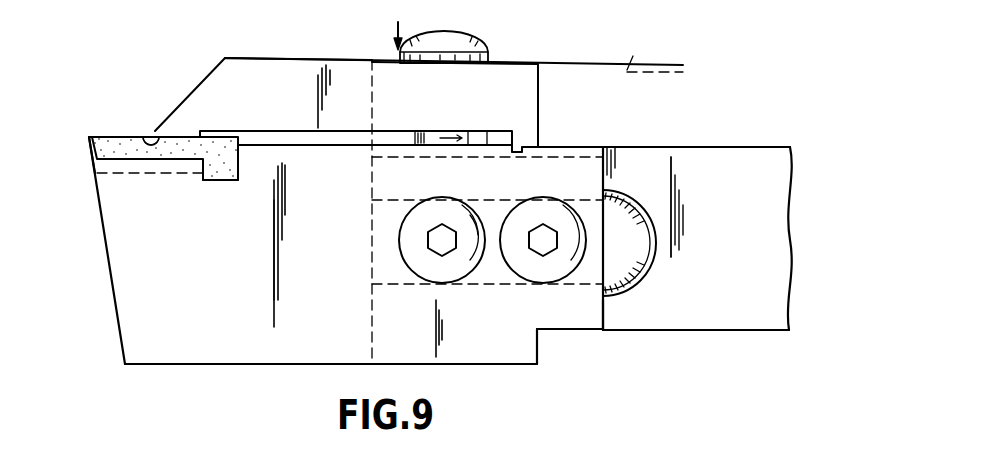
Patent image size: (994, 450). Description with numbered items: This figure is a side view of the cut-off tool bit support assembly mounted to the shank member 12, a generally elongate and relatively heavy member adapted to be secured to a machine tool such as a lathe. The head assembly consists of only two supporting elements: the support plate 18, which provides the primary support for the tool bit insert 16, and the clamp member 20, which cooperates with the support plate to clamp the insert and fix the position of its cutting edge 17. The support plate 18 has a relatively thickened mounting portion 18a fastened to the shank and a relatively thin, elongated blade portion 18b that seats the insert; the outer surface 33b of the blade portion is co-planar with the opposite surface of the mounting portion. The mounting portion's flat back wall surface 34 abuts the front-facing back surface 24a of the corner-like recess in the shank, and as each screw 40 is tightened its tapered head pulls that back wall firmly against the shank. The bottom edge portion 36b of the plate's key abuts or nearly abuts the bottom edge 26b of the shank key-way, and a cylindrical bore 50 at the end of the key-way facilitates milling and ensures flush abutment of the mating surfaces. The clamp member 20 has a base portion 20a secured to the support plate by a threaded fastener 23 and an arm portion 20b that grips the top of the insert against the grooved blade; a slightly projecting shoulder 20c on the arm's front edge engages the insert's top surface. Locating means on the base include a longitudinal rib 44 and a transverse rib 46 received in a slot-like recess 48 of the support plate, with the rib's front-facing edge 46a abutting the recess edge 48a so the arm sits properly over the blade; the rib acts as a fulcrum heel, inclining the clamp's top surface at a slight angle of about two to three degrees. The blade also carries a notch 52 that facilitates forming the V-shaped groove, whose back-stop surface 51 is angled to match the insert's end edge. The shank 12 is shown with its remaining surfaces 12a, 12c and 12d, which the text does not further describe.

The shank member 12 is at (692, 147).
The top surface of base plate 12a is at (725, 146).
The side wall of base plate 12c is at (742, 247).
The bottom surface of base plate 12d is at (712, 333).
The tool bit insert 16 is at (118, 137).
The cutting edge 17 is at (88, 136).
The support plate 18 is at (538, 364).
The mounting portion 18a is at (480, 348).
The blade portion 18b is at (237, 347).
The clamp member 20 is at (540, 93).
The base portion 20a is at (508, 85).
The arm portion 20b is at (248, 66).
The shoulder 20c is at (143, 139).
The threaded fastener 23 is at (472, 34).
The back surface 24a is at (592, 329).
The bottom edge of key-way 26b is at (477, 278).
The outer surface of blade portion 33b is at (233, 278).
The back wall surface 34 is at (617, 311).
The bottom edge portion of key 36b is at (513, 285).
The screw 40 is at (461, 226).
The longitudinal rib 44 is at (398, 150).
The transverse rib 46 is at (528, 148).
The front-facing edge 46a is at (508, 149).
The slot-like recess 48 is at (538, 148).
The recess edge 48a is at (512, 153).
The cylindrical bore 50 is at (640, 246).
The back-stop surface 51 is at (223, 177).
The notch 52 is at (217, 178).